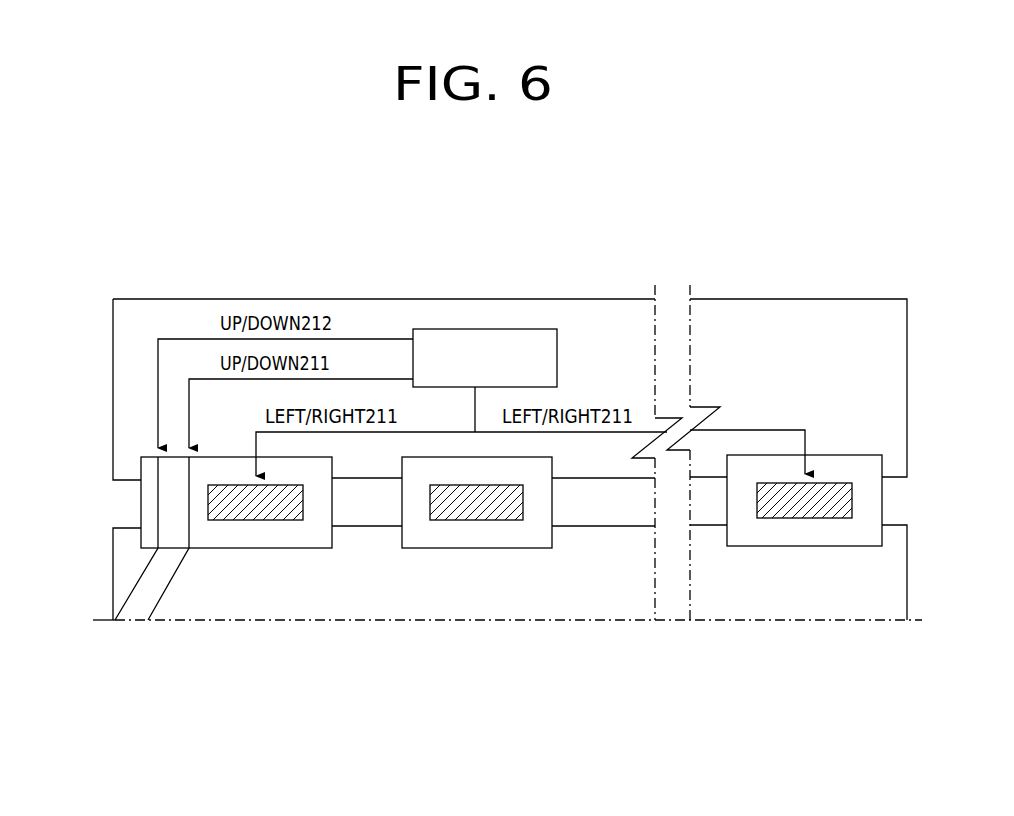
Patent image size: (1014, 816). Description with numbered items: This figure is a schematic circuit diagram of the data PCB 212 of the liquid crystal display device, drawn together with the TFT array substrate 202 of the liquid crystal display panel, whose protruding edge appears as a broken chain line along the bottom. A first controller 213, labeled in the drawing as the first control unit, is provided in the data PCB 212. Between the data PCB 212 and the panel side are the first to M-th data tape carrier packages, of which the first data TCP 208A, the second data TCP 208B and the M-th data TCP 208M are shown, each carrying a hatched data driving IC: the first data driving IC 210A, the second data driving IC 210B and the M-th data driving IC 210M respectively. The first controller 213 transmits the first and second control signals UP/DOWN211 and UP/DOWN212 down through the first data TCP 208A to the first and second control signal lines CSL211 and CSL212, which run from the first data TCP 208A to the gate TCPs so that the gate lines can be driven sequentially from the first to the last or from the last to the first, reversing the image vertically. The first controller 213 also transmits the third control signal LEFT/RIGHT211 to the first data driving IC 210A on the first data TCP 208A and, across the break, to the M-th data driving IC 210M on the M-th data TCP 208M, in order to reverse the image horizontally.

The TFT array substrate 202 is at (622, 607).
The data PCB 212 is at (572, 310).
The first controller 213 is at (479, 329).
The first data TCP 208A is at (222, 540).
The second data TCP 208B is at (445, 540).
The M-th data TCP 208M is at (778, 538).
The first data driving IC 210A is at (283, 512).
The second data driving IC 210B is at (505, 510).
The M-th data driving IC 210M is at (840, 507).
The first control signal line CSL211 is at (160, 598).
The second control signal line CSL212 is at (150, 565).